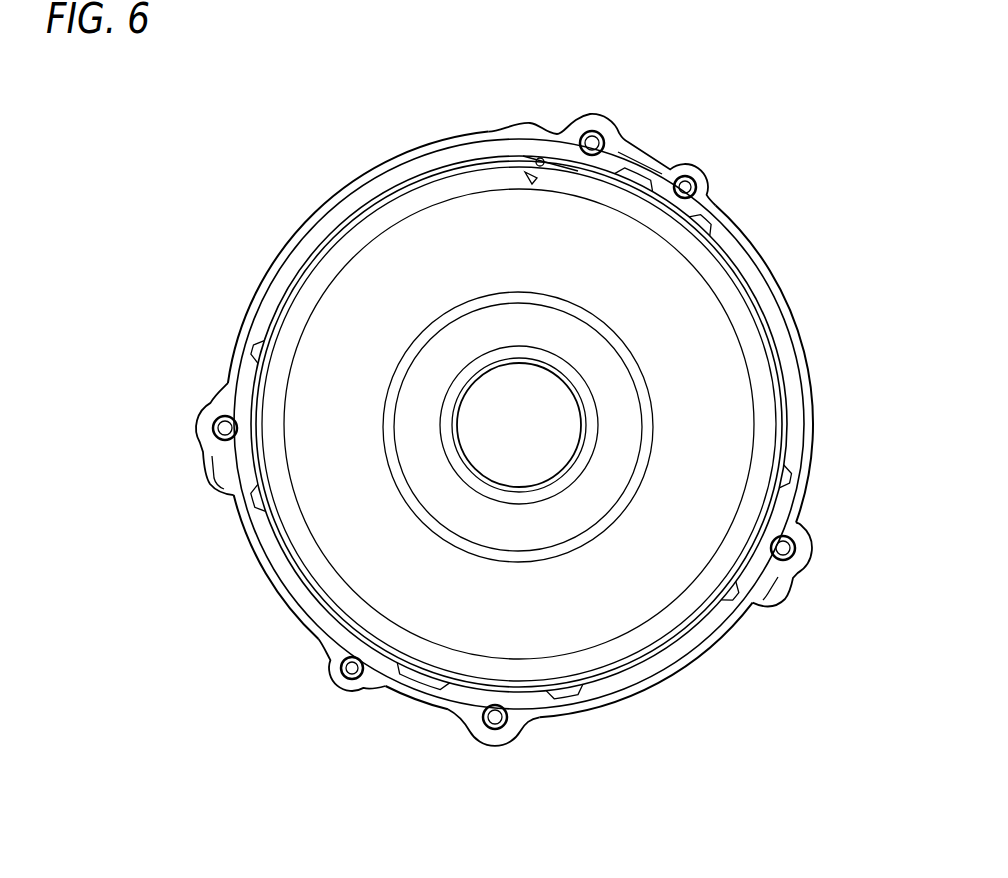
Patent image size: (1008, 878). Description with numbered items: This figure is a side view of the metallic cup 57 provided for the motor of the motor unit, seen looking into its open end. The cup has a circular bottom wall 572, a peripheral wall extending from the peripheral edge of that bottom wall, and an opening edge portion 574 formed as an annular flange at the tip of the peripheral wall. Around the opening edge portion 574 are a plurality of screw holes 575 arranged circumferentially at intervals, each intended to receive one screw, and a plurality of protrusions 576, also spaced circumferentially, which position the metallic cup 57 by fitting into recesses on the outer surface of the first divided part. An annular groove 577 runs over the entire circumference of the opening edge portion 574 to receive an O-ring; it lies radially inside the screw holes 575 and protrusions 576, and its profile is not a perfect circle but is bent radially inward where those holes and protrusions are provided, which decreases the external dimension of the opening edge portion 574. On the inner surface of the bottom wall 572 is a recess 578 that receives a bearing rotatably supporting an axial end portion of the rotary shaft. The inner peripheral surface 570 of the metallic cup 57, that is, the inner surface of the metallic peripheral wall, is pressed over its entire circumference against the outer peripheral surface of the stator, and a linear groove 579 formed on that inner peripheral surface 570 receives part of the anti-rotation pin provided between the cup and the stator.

The metallic cup 57 is at (810, 370).
The inner peripheral surface 570 is at (286, 531).
The bottom wall 572 is at (352, 333).
The opening edge portion 574 is at (743, 236).
The screw holes 575 is at (592, 142).
The protrusions 576 is at (688, 184).
The groove 577 is at (377, 188).
The recess 578 is at (570, 415).
The linear groove 579 is at (530, 176).